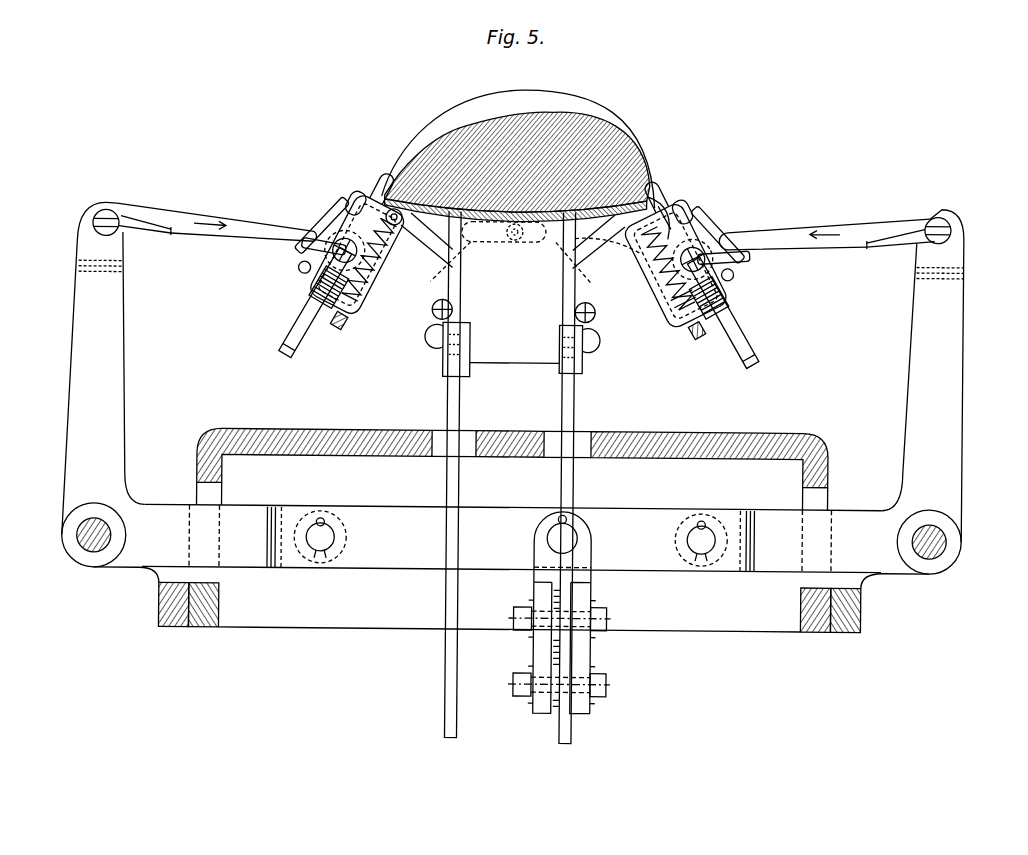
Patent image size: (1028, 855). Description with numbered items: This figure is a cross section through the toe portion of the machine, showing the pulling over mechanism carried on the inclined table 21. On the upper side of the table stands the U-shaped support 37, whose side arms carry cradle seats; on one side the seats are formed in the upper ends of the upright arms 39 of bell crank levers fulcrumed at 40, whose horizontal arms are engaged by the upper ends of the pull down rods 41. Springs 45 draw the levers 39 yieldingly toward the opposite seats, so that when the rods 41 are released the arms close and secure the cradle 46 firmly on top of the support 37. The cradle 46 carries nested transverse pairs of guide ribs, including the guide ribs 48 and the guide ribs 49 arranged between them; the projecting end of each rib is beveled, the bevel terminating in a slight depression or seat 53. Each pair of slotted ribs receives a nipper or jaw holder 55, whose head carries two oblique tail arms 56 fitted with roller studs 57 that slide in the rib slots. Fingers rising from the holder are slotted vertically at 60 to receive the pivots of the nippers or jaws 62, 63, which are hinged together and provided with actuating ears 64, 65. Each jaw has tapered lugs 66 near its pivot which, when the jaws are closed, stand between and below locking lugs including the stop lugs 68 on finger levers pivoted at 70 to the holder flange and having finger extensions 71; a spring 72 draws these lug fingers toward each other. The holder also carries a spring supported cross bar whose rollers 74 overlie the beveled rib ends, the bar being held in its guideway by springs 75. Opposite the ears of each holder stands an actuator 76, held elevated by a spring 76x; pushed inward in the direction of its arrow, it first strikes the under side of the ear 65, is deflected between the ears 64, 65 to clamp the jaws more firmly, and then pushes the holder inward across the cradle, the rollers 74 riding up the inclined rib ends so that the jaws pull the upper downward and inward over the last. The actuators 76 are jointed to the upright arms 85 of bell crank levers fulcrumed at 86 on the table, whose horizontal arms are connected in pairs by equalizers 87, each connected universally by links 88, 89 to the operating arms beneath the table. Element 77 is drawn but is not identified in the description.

The inclined table 21 is at (732, 434).
The support 37 is at (527, 365).
The upright arms of bell crank levers 39 is at (449, 278).
The fulcrum 40 is at (435, 345).
The pull down rods 41 is at (446, 404).
The springs 45 is at (431, 312).
The cradle 46 is at (540, 226).
The guide ribs 48 is at (447, 262).
The guide ribs 49 is at (660, 200).
The depression or seat 53 is at (580, 232).
The nipper or jaw holder 55 is at (373, 292).
The tail arms 56 is at (454, 258).
The roller studs 57 is at (511, 240).
The vertical slots 60 is at (666, 302).
The nipper or jaw 62 is at (388, 210).
The nipper or jaw 63 is at (367, 200).
The actuating ear 64 is at (301, 247).
The actuating ear 65 is at (299, 207).
The tapered lug 66 is at (345, 222).
The locking lugs 68 is at (673, 214).
The pivot 70 is at (313, 288).
The finger extensions 71 is at (291, 345).
The spring 72 is at (297, 269).
The rollers 74 is at (450, 236).
The spring 75 is at (363, 312).
The actuator 76 is at (202, 220).
The spring 76x is at (142, 230).
The stop 77 is at (339, 331).
The upright arms 85 is at (126, 346).
The fulcrum 86 is at (72, 538).
The equalizers 87 is at (510, 557).
The link 88 is at (595, 549).
The link 89 is at (533, 650).